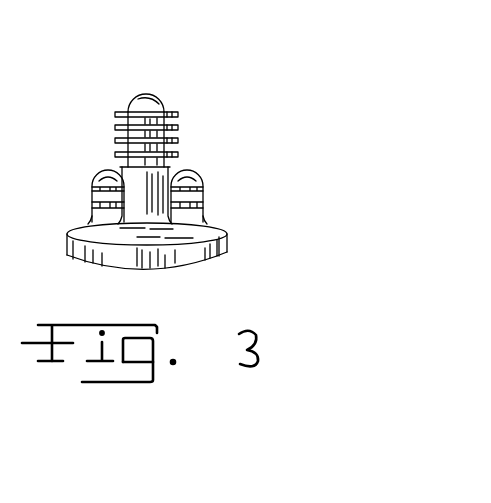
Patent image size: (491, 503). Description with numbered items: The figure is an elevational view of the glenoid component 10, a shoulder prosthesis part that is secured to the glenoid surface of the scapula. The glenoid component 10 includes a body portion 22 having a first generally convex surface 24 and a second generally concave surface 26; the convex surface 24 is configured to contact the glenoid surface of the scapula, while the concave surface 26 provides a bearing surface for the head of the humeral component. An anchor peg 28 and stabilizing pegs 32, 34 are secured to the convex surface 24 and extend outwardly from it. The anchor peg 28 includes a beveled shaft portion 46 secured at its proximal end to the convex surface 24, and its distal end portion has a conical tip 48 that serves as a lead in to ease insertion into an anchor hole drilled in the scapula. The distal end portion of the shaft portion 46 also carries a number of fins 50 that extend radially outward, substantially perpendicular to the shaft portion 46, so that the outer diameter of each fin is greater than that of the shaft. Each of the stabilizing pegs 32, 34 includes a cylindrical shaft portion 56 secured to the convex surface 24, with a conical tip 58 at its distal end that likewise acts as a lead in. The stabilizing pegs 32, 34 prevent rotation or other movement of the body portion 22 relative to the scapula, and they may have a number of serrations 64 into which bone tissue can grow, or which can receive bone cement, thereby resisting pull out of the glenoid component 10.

The glenoid component 10 is at (250, 72).
The body portion 22 is at (226, 252).
The first generally convex surface 24 is at (77, 231).
The second generally concave surface 26 is at (165, 271).
The anchor peg 28 is at (177, 101).
The stabilizing peg 32 is at (92, 215).
The stabilizing peg 34 is at (200, 212).
The beveled shaft portion 46 is at (169, 168).
The conical tip 48 is at (148, 92).
The fins 50 is at (178, 155).
The cylindrical shaft portion 56 is at (92, 200).
The conical tip 58 is at (190, 168).
The serrations 64 is at (201, 198).